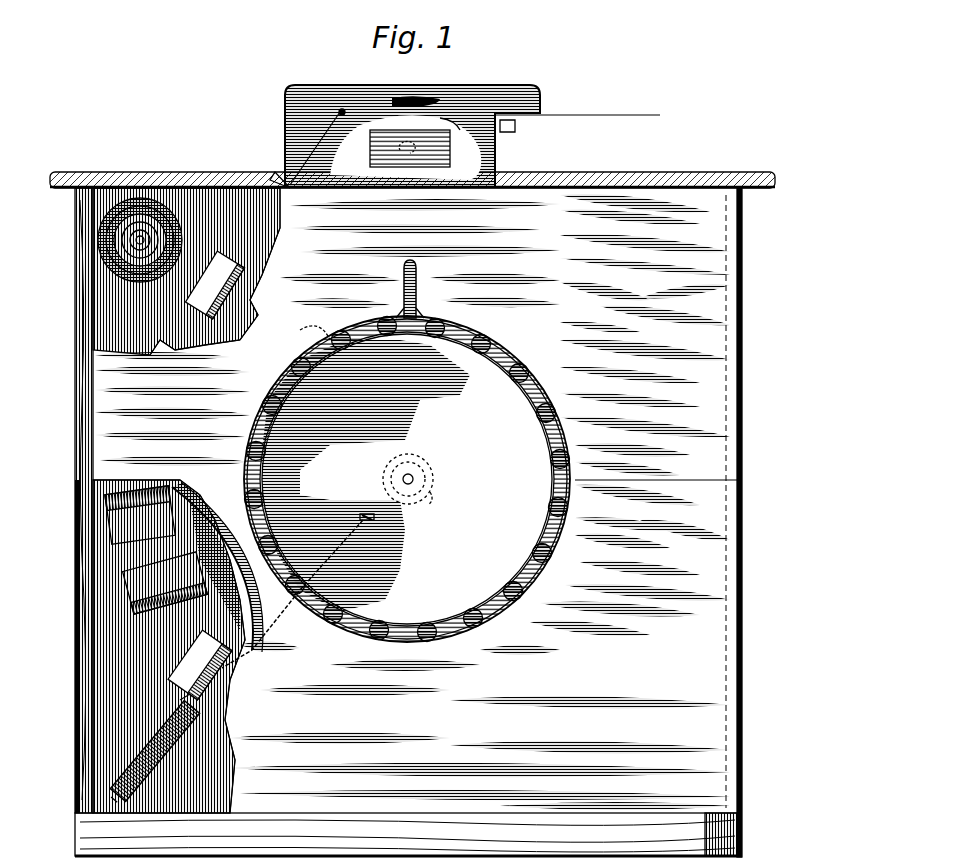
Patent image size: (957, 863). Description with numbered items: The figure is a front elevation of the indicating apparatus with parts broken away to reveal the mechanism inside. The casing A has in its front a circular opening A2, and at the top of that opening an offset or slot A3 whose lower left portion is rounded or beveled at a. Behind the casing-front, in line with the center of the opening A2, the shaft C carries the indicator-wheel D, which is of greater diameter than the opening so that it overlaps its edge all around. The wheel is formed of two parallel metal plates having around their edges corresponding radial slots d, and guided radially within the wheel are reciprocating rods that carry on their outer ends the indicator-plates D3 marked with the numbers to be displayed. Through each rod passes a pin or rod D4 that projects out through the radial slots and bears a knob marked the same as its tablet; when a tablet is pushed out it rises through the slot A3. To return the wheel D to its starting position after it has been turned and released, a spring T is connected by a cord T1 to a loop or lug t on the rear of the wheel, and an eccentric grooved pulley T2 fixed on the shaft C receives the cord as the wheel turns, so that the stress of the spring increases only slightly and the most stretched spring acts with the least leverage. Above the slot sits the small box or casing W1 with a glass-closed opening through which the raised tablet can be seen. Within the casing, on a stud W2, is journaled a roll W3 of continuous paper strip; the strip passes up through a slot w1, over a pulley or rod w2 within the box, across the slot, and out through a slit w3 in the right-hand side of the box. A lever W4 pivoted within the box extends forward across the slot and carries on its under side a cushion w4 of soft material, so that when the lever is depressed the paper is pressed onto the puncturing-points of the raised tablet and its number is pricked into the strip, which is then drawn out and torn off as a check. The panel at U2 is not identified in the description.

The casing A is at (411, 522).
The circular opening A2 is at (535, 588).
The offset or slot A3 is at (415, 262).
The rounded or beveled portion a is at (402, 305).
The shaft C is at (412, 478).
The indicator-wheel D is at (407, 479).
The indicator-plates D3 is at (176, 432).
The pin or rod D4 is at (315, 324).
The radial slots d is at (217, 567).
The spring T is at (175, 745).
The cord T1 is at (330, 558).
The grooved pulley T2 is at (448, 497).
The loop or lug t is at (375, 520).
The lower panel U2 is at (108, 740).
The box or casing W1 is at (490, 150).
The stud W2 is at (112, 245).
The roll of paper W3 is at (600, 108).
The lever W4 is at (415, 105).
The slot w1 is at (285, 182).
The pulley or rod w2 is at (345, 95).
The slit w3 is at (498, 122).
The cushion w4 is at (450, 100).